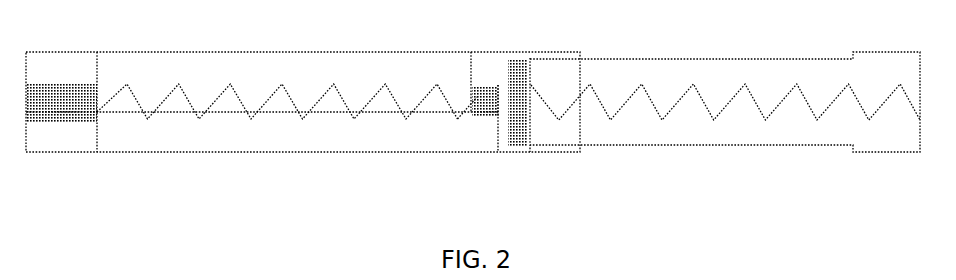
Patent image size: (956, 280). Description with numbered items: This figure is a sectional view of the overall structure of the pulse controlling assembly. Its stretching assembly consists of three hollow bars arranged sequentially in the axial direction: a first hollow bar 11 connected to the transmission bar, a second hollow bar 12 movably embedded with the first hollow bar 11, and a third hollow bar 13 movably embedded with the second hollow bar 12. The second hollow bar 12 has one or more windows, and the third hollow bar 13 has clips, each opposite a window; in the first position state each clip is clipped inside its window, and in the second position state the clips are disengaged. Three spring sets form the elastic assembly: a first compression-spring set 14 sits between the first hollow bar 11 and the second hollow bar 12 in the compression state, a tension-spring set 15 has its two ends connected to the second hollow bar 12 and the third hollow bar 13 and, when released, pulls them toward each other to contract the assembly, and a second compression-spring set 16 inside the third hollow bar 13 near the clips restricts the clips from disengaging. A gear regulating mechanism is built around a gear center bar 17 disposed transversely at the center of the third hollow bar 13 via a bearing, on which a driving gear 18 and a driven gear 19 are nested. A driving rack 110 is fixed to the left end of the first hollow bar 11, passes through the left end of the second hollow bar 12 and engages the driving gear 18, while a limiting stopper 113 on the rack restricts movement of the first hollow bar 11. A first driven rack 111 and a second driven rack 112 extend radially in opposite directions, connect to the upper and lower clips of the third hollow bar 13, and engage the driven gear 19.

The first hollow bar 11 is at (58, 153).
The second hollow bar 12 is at (262, 153).
The third hollow bar 13 is at (788, 145).
The first compression-spring set 14 is at (60, 122).
The tension-spring set 15 is at (205, 112).
The second compression-spring set 16 is at (540, 148).
The gear center bar 17 is at (488, 92).
The driving gear 18 is at (483, 105).
The driven gear 19 is at (466, 125).
The driving rack 110 is at (500, 148).
The first driven rack 111 is at (527, 58).
The second driven rack 112 is at (477, 98).
The limiting stopper 113 is at (97, 112).